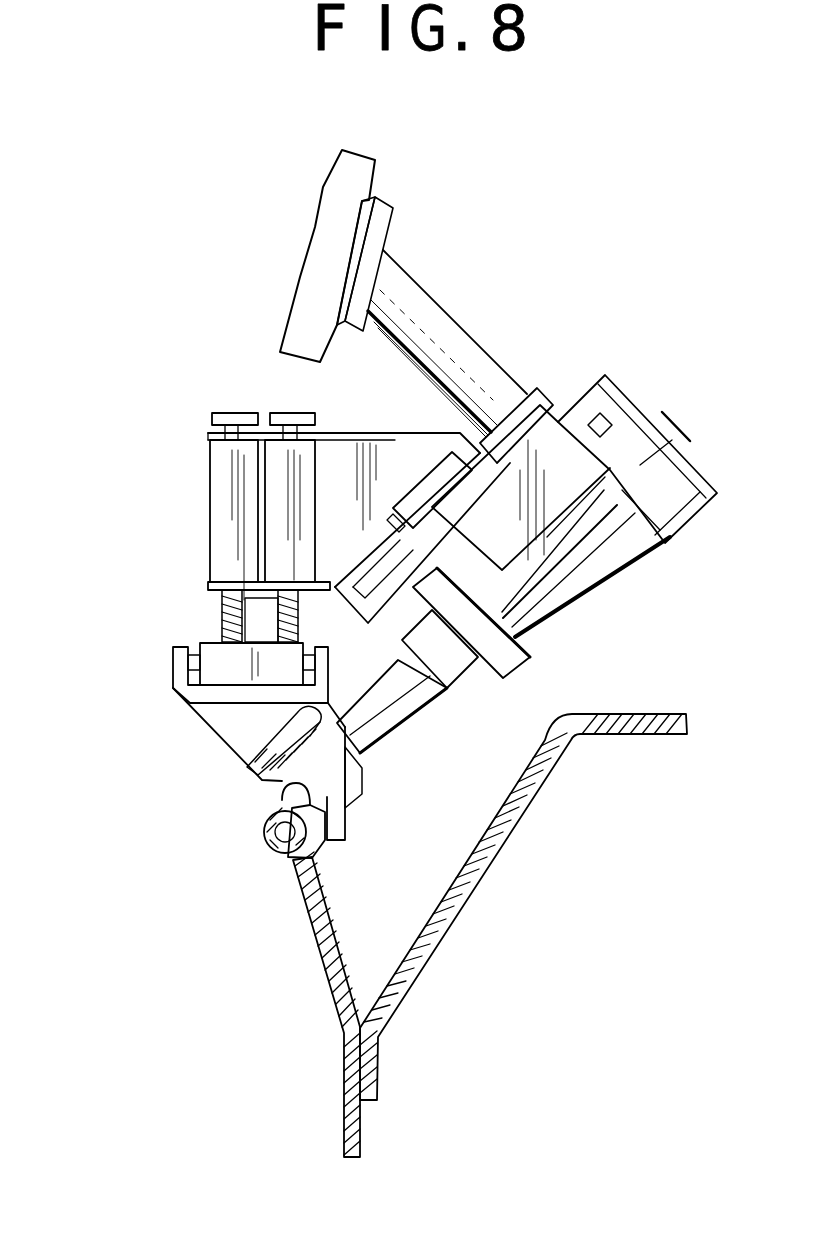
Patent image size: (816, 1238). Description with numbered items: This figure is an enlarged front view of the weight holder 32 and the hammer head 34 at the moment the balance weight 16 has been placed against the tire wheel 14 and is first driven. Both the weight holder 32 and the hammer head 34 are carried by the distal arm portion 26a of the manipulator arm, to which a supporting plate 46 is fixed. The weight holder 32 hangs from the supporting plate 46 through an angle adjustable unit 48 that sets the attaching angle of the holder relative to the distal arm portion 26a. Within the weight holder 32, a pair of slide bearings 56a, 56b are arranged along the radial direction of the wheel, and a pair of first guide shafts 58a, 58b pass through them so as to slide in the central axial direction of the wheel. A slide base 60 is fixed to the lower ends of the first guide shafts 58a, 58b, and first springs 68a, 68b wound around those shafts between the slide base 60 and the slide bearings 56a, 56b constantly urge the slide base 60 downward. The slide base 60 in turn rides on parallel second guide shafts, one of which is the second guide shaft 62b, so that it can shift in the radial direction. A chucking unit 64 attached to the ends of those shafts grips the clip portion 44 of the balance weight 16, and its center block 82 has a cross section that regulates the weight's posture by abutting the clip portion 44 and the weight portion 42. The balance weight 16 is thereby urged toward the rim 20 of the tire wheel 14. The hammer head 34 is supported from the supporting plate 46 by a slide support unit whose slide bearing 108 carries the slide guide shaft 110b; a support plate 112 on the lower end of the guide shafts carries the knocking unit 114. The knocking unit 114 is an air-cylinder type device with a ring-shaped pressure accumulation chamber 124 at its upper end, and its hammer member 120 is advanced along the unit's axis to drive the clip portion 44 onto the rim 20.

The tire wheel 14 is at (328, 1002).
The balance weight 16 is at (244, 876).
The rim 20 is at (275, 845).
The distal arm portion 26a is at (458, 328).
The weight holder 32 is at (124, 562).
The hammer head 34 is at (692, 553).
The weight portion 42 is at (300, 900).
The clip portion 44 is at (295, 882).
The supporting plate 46 is at (527, 397).
The angle adjustable unit 48 is at (393, 457).
The slide bearing 56a is at (280, 470).
The slide bearing 56b is at (222, 513).
The first guide shaft 58a is at (290, 412).
The first guide shaft 58b is at (222, 412).
The slide base 60 is at (203, 642).
The second guide shaft 62b is at (190, 687).
The chucking unit 64 is at (236, 804).
The first spring 68a is at (298, 633).
The first spring 68b is at (222, 615).
The center block 82 is at (248, 727).
The slide bearing 108 is at (563, 440).
The slide guide shaft 110b is at (593, 423).
The support plate 112 is at (518, 656).
The knocking unit 114 is at (606, 576).
The hammer member 120 is at (397, 720).
The pressure accumulation chamber 124 is at (672, 460).